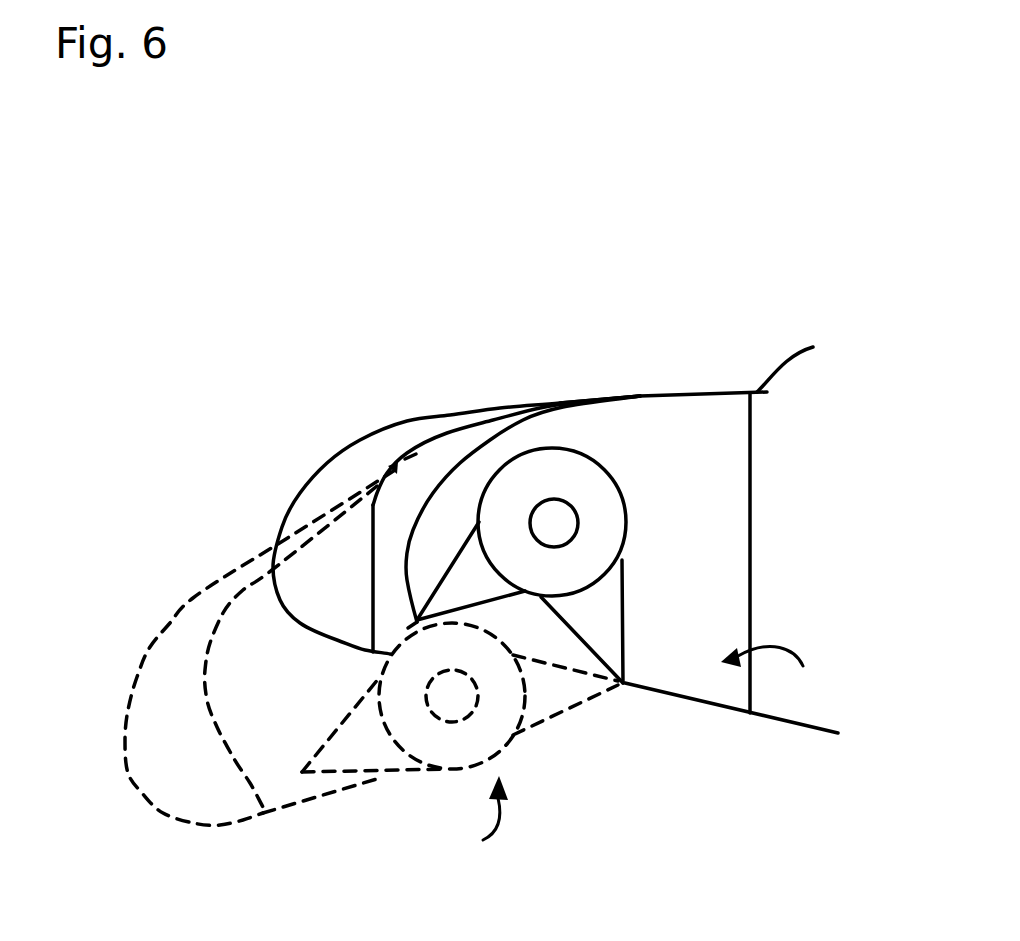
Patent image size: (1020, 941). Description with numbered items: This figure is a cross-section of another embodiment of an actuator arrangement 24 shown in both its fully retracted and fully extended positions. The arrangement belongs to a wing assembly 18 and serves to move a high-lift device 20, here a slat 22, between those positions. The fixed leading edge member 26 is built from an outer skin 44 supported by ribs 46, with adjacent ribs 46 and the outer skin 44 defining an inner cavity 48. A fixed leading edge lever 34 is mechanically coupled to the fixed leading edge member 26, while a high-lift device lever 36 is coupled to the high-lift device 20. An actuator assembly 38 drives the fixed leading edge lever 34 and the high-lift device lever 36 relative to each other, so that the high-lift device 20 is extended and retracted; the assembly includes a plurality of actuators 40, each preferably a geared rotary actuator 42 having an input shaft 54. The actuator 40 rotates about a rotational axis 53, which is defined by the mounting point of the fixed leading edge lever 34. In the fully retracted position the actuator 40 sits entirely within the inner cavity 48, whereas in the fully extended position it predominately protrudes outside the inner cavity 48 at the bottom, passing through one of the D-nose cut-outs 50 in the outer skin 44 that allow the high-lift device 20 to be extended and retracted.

The wing assembly 18 is at (318, 205).
The high-lift device 20 is at (380, 382).
The slat 22 is at (403, 432).
The actuator arrangement 24 is at (582, 285).
The fixed leading edge member 26 is at (723, 372).
The fixed leading edge lever 34 is at (620, 610).
The high-lift device lever 36 is at (460, 583).
The actuator assembly 38 is at (596, 376).
The actuator 40 is at (581, 453).
The geared rotary actuator 42 is at (617, 478).
The outer skin 44 is at (811, 362).
The ribs 46 is at (743, 482).
The inner cavity 48 is at (732, 690).
The D-nose cut-outs 50 is at (474, 830).
The rotational axis 53 is at (627, 686).
The input shaft 54 is at (577, 524).